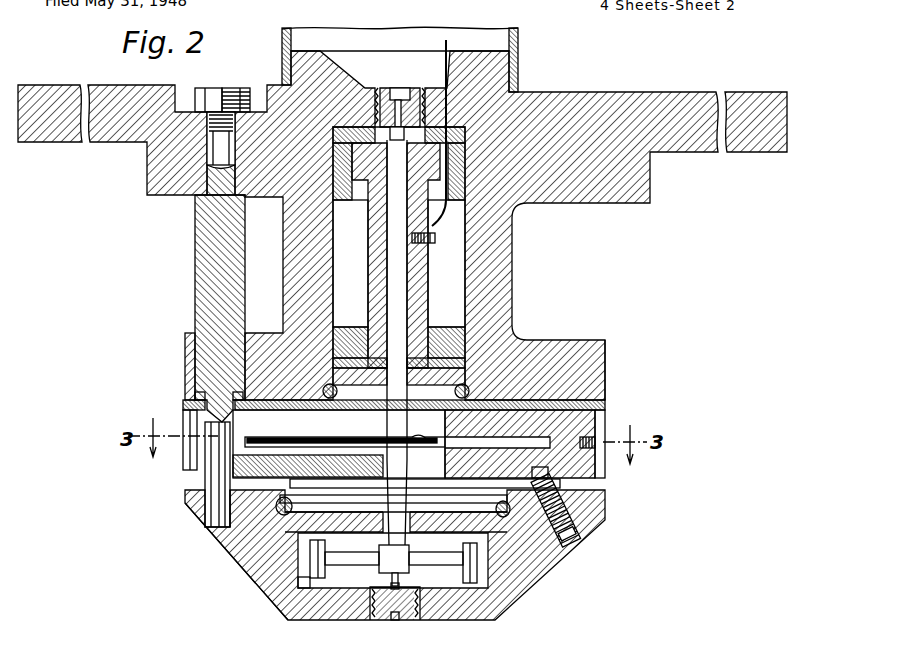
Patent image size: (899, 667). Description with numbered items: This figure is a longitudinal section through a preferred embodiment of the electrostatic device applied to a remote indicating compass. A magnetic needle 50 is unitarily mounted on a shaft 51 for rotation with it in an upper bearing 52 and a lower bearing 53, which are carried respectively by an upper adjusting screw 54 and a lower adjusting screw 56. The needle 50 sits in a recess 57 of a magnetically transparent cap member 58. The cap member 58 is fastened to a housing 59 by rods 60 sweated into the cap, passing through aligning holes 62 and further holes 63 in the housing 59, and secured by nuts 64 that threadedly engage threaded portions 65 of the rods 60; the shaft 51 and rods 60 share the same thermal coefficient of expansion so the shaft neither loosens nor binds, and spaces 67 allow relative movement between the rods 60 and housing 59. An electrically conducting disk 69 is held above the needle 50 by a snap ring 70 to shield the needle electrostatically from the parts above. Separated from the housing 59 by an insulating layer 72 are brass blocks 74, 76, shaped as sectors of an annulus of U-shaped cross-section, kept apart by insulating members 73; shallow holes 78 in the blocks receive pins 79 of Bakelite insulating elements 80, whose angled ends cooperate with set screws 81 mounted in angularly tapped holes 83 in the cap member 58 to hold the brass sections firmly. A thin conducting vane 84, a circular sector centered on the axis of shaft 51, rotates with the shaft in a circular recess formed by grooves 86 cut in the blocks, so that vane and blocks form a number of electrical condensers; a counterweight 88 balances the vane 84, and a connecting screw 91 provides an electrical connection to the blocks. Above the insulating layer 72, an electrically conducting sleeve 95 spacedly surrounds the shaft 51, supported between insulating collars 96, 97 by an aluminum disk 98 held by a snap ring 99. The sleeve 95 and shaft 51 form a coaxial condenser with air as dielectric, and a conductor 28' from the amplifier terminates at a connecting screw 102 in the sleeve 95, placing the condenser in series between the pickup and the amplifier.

The conductor 28' is at (460, 128).
The upper bearing 52 is at (406, 94).
The upper adjusting screw 54 is at (392, 90).
The housing 59 is at (147, 183).
The rods 60 is at (195, 262).
The aligning holes 62 is at (186, 357).
The further holes 63 is at (187, 198).
The nuts 64 is at (238, 90).
The threaded portions 65 is at (209, 89).
The spaces 67 is at (196, 394).
The electrically conducting disk 69 is at (292, 540).
The snap ring 70 is at (253, 524).
The insulating layer 72 is at (183, 403).
The insulating members 73 is at (280, 487).
The brass block 74 is at (205, 455).
The brass block 76 is at (578, 480).
The shallow holes 78 is at (570, 476).
The pins 79 is at (530, 476).
The Bakelite insulating elements 80 is at (280, 503).
The set screws 81 is at (588, 526).
The angularly tapped holes 83 is at (574, 551).
The vane 84 is at (335, 457).
The grooves 86 is at (605, 420).
The counterweight 88 is at (412, 440).
The connecting screw 91 is at (605, 466).
The electrically conducting sleeve 95 is at (428, 298).
The insulating collar 96 is at (399, 227).
The insulating collar 97 is at (351, 327).
The aluminum disk 98 is at (470, 387).
The snap ring 99 is at (565, 340).
The connecting screw 102 is at (437, 242).
The magnetic needle 50 is at (456, 562).
The shaft 51 is at (424, 535).
The lower bearing 53 is at (390, 590).
The lower adjusting screw 56 is at (400, 605).
The recess 57 is at (310, 588).
The cap member 58 is at (523, 590).